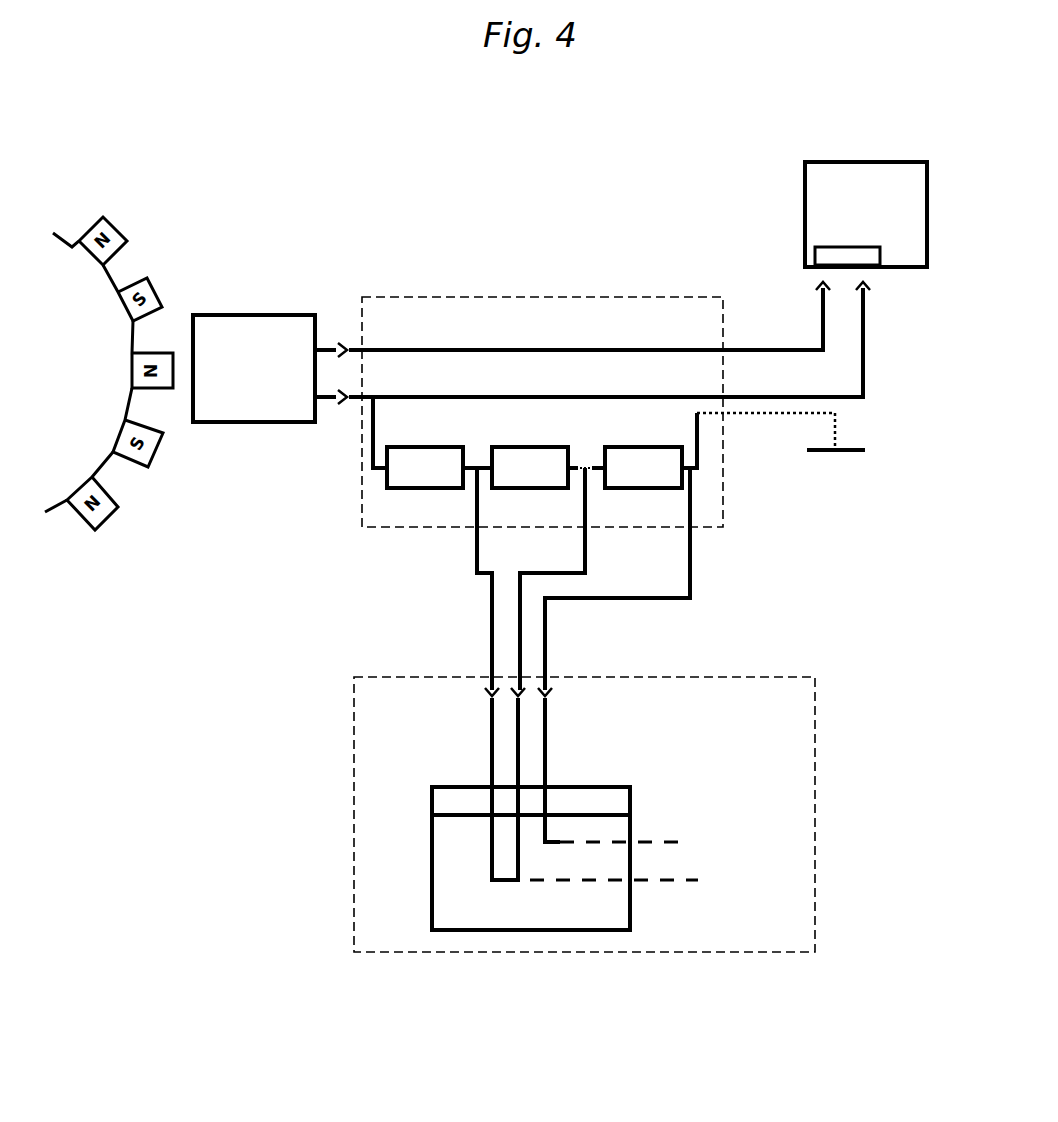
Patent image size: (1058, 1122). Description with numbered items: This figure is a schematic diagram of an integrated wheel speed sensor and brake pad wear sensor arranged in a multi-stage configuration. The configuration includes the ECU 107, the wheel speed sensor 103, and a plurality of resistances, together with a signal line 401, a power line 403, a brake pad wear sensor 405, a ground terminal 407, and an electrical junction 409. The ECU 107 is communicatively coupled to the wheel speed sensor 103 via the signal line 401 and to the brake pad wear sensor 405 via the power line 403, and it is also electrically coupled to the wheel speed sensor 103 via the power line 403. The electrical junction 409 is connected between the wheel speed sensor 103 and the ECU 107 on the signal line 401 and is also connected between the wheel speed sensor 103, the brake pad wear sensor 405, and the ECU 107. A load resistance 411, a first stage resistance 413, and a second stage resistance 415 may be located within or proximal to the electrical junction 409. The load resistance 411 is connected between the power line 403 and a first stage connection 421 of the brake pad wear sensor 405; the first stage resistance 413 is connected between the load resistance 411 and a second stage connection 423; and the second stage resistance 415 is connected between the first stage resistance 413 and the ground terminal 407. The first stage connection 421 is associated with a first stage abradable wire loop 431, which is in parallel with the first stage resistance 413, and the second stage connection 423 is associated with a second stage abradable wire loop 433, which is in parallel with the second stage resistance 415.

The wheel speed sensor 103 is at (215, 425).
The ECU 107 is at (805, 200).
The signal line 401 is at (755, 348).
The power line 403 is at (866, 371).
The brake pad wear sensor 405 is at (535, 814).
The ground terminal 407 is at (836, 435).
The electrical junction 409 is at (491, 493).
The load resistance 411 is at (418, 490).
The first stage resistance 413 is at (515, 490).
The second stage resistance 415 is at (617, 490).
The first stage connection 421 is at (490, 730).
The second stage connection 423 is at (547, 731).
The first stage abradable wire loop 431 is at (638, 882).
The second stage abradable wire loop 433 is at (644, 845).